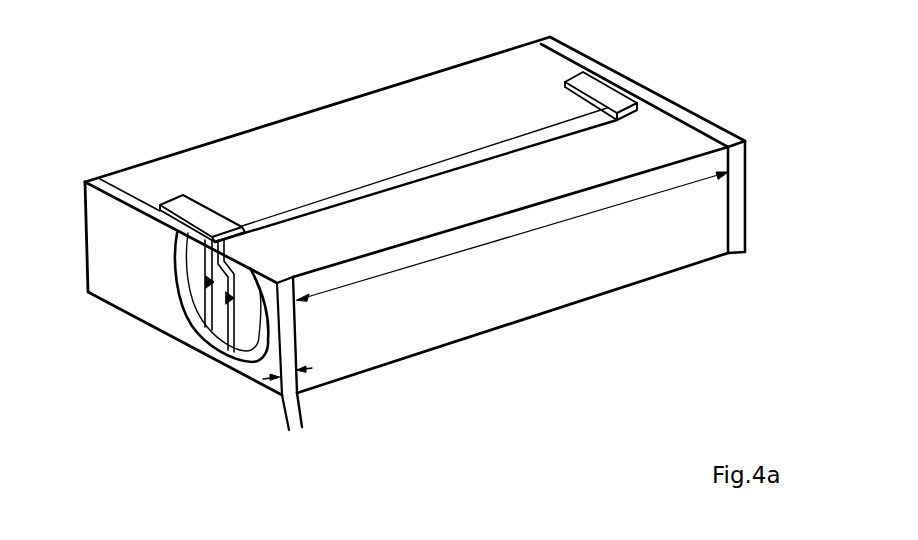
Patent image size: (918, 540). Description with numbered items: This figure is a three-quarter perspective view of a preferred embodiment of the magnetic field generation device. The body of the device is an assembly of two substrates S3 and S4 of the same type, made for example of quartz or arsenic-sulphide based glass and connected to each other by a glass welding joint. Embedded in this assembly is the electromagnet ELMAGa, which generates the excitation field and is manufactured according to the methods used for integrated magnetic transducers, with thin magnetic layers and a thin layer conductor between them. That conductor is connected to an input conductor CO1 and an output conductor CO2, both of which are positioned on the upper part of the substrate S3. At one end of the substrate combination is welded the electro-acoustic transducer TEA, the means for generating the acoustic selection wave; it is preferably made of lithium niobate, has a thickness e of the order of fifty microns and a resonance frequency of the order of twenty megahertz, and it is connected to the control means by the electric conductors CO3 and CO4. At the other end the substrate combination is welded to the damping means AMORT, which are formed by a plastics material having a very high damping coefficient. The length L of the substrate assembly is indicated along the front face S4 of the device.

The substrate S3 is at (358, 118).
The substrate S4 is at (637, 270).
The damping means AMORT is at (663, 101).
The electro-acoustic transducer TEA is at (103, 257).
The input conductor CO1 is at (162, 203).
The output conductor CO2 is at (585, 62).
The electric conductor CO3 is at (288, 428).
The electric conductor CO4 is at (305, 428).
The electromagnet ELMAGa is at (215, 325).
The length dimension L is at (512, 236).
The thickness e is at (287, 374).